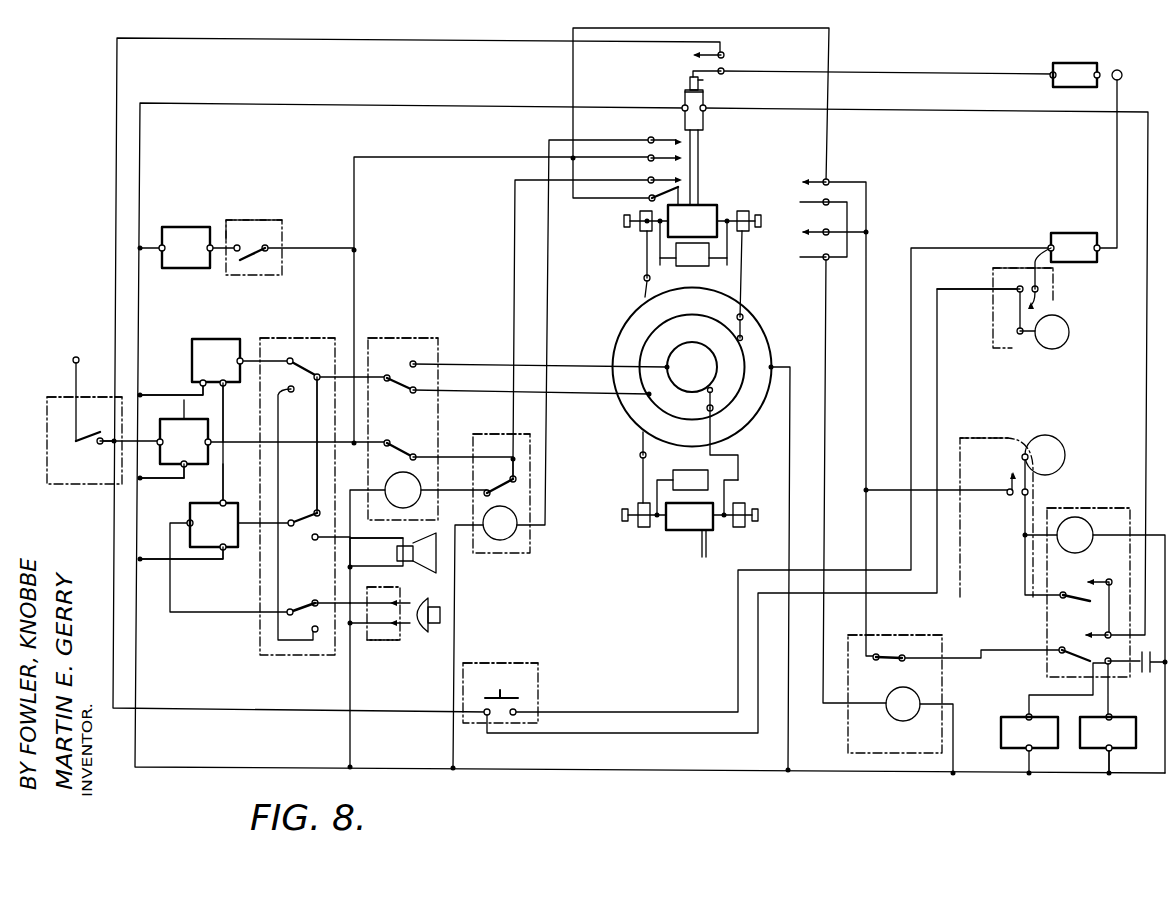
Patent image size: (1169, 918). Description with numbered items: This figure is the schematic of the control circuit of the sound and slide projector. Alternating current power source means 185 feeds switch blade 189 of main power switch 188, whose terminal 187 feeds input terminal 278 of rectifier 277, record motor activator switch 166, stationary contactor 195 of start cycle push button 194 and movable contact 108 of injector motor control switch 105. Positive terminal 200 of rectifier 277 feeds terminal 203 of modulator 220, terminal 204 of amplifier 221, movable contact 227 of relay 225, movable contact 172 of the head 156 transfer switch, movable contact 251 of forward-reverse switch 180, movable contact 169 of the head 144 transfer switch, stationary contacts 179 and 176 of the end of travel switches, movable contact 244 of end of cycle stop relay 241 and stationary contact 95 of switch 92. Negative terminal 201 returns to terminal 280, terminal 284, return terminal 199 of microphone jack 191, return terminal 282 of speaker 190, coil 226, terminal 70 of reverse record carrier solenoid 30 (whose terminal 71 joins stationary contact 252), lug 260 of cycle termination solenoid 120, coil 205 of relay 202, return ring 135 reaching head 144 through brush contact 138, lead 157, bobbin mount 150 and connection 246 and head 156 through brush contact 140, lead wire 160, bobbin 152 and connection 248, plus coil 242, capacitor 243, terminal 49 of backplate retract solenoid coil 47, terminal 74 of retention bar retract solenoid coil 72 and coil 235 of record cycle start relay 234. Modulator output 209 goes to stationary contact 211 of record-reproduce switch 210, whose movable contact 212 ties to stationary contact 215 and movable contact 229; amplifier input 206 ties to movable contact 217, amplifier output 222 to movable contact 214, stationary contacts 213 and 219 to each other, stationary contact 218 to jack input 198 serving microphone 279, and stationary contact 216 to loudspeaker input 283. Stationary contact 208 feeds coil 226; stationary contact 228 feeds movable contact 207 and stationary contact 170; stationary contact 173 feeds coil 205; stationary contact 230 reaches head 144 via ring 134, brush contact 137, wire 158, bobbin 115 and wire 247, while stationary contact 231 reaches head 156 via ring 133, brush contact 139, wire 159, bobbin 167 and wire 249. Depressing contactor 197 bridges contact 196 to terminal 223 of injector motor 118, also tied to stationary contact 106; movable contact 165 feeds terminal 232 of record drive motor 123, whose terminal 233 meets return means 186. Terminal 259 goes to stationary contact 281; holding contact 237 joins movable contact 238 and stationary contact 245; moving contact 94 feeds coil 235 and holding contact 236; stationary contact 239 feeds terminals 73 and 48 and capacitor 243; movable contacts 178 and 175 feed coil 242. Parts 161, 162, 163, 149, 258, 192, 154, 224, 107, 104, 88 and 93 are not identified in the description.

The reverse record carrier solenoid 30 is at (190, 227).
The reverse record carrier solenoid power return terminal 70 is at (165, 248).
The power input terminal of reverse record carrier solenoid 71 is at (207, 250).
The record carrier magazine forward-reverse switch 180 is at (252, 220).
The stationary contact of record carrier magazine forward-reverse switch 252 is at (238, 246).
The movable contact of record carrier magazine forward-reverse switch 251 is at (267, 251).
The alternating current power source means 185 is at (79, 357).
The main alternating current power switch 188 is at (53, 397).
The main alternating current power switch blade 189 is at (73, 440).
The alternating current power input means terminal 187 is at (98, 444).
The modulator 220 is at (222, 339).
The output terminal of modulator 209 is at (242, 358).
The record-reproduce switch 210 is at (328, 338).
The stationary contact of record-reproduce switch 211 is at (296, 358).
The movable contact of record-reproduce switch 212 is at (330, 360).
The modulator power return terminal 280 is at (200, 385).
The alternating current to direct current rectifier 277 is at (186, 419).
The input terminal of rectifier 278 is at (163, 441).
The direct current positive output power means terminal 200 is at (206, 444).
The direct current power input terminal of modulator 203 is at (225, 386).
The stationary contact of record-reproduce switch 213 is at (288, 391).
The negative direct current power means return terminal 201 is at (186, 467).
The direct current power input terminal of amplifier 204 is at (224, 480).
The stationary contact of record-reproduce switch 215 is at (316, 510).
The amplifier 221 is at (178, 480).
The signal input terminal of amplifier 206 is at (188, 521).
The signal return terminal of amplifier 284 is at (230, 538).
The output terminal of amplifier 222 is at (238, 552).
The movable contact of record-reproduce switch 214 is at (292, 526).
The stationary contact of record-reproduce switch 216 is at (316, 540).
The stationary contact of record-reproduce switch 218 is at (318, 590).
The movable contact of record-reproduce switch 217 is at (288, 614).
The stationary contact of record-reproduce switch 219 is at (312, 629).
The selector relay 225 is at (405, 338).
The stationary contact of selector relay 231 is at (396, 356).
The movable contact of relay 229 is at (410, 363).
The stationary contact of selector relay 230 is at (414, 393).
The movable contact of relay 227 is at (388, 440).
The stationary contact of relay 228 is at (412, 460).
The coil of relay 226 is at (416, 478).
The head 156 selector relay 202 is at (500, 434).
The movable contact of relay 207 is at (516, 479).
The stationary contact of relay 208 is at (488, 496).
The head 156 selector relay coil 205 is at (497, 540).
The signal input terminal of loudspeaker 283 is at (378, 538).
The signal return terminal of speaker 282 is at (391, 562).
The loudspeaker 190 is at (414, 562).
The signal input terminal of microphone jack 198 is at (392, 600).
The microphone jack signal return terminal 199 is at (392, 626).
The microphone 279 is at (434, 624).
The microphone jack 191 is at (394, 643).
The start cycle push button 194 is at (503, 663).
The contactor of push button 197 is at (505, 678).
The stationary contact of start cycle push button 196 is at (516, 710).
The start cycle push button stationary contactor 195 is at (485, 716).
The record motor activator switch 166 is at (725, 54).
The movable contact of record motor activator switch 165 is at (725, 70).
The plunger head 163 is at (700, 80).
The conductor 162 is at (704, 86).
The cycle termination solenoid 120 is at (685, 90).
The cycle termination return terminal lug 260 is at (680, 105).
The terminal of cycle termination solenoid 259 is at (706, 110).
The plunger rod 161 is at (700, 162).
The stationary contact of head 156 transfer switch 173 is at (648, 138).
The movable contact of head 156 transfer switch 172 is at (648, 156).
The stationary contact of head 144 transfer switch 170 is at (648, 178).
The movable contact of head 144 transfer switch 169 is at (649, 197).
The conductor 149 is at (664, 211).
The bobbin mount 150 is at (640, 229).
The wiper unit 258 is at (692, 221).
The bobbin 115 is at (745, 211).
The signal return lead 157 is at (658, 258).
The wire 158 is at (730, 272).
The head 144 is at (693, 254).
The wire connection 246 is at (662, 260).
The wire 247 is at (726, 260).
The brush contact 138 is at (644, 279).
The brush contact 137 is at (738, 316).
The common signal return commutator ring 135 is at (618, 325).
The signal commutator ring 134 is at (672, 322).
The signal commutator ring 133 is at (700, 343).
The brush contact 139 is at (707, 408).
The brush contact 140 is at (640, 454).
The lead wire 160 is at (641, 485).
The bobbin 152 is at (642, 528).
The wiper unit 192 is at (689, 516).
The plunger rod 154 is at (700, 552).
The bobbin 167 is at (740, 528).
The head 156 is at (690, 480).
The lead wire connection 248 is at (658, 478).
The wire 249 is at (726, 478).
The wire 159 is at (740, 455).
The stationary contact of head 156 end of travel switch 179 is at (828, 180).
The movable contact of head 156 end of travel switch 178 is at (828, 200).
The stationary contact of head 144 end of travel switch 176 is at (824, 230).
The movable contact of head 144 end of travel switch 175 is at (824, 256).
The alternating current power input terminal of record drive motor 232 is at (1050, 74).
The record drive motor 123 is at (1085, 63).
The terminal of record drive motor 233 is at (1100, 73).
The alternating current power return means 186 is at (1122, 75).
The injector motor 118 is at (1080, 233).
The alternating current input power terminal of injector motor 223 is at (1048, 247).
The terminal 224 is at (1099, 251).
The injector motor control switch 105 is at (985, 271).
The movable contact of injector motor control switch 108 is at (1017, 291).
The stationary contact of injector motor control switch 106 is at (1038, 292).
The contact 107 is at (1018, 334).
The lamp 104 is at (1062, 347).
The start record cycle momentary switch 92 is at (998, 438).
The lamp 88 is at (1058, 442).
The contact 93 is at (1022, 458).
The stationary contact of start record cycle switch 95 is at (1008, 490).
The moving contact of start record cycle momentary switch 94 is at (1028, 491).
The record cycle start relay 234 is at (1096, 508).
The record cycle start relay coil 235 is at (1080, 517).
The stationary holding contact of record cycle start relay 237 is at (1111, 580).
The movable holding contact of record cycle start relay 236 is at (1062, 592).
The stationary contact of record cycle start relay 281 is at (1106, 632).
The movable contact of record cycle start relay 238 is at (1060, 649).
The stationary contact of relay 239 is at (1110, 665).
The time delay capacitor 243 is at (1157, 652).
The end of cycle stop relay 241 is at (893, 635).
The movable contact of end of cycle stop relay 244 is at (876, 660).
The stationary contact of end of cycle stop relay 245 is at (902, 656).
The coil of end of cycle stop relay 242 is at (896, 690).
The terminal of backplate retract solenoid coil 48 is at (1027, 714).
The backplate retract solenoid coil 47 is at (1001, 732).
The return terminal of backplate retract solenoid coil 49 is at (1027, 751).
The terminal of retention bar retract solenoid coil 73 is at (1112, 716).
The retention bar retract solenoid coil 72 is at (1107, 751).
The return terminal of retention bar retract solenoid coil 74 is at (1111, 752).